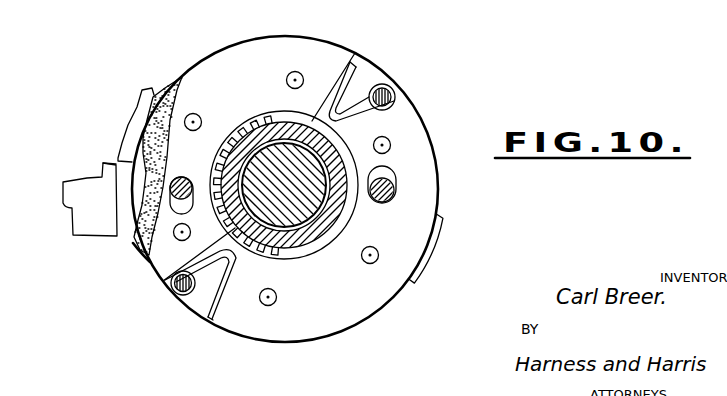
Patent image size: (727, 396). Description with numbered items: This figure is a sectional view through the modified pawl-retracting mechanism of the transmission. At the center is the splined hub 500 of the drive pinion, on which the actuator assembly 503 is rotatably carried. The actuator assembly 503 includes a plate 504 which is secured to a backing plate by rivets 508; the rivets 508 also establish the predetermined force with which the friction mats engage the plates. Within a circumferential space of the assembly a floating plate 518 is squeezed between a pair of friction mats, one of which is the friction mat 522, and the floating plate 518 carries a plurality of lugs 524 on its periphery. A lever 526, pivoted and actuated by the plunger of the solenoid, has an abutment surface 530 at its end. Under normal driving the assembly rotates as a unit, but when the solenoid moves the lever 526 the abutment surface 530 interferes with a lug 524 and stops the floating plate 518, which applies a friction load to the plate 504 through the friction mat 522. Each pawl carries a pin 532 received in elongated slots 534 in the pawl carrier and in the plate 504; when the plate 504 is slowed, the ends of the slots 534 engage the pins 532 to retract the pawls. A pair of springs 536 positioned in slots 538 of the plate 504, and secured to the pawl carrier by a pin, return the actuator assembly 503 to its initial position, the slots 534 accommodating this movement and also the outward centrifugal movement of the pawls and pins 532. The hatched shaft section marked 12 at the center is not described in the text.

The shaft 12 is at (284, 185).
The splined hub 500 is at (309, 249).
The actuator assembly 503 is at (393, 92).
The plate 504 is at (310, 37).
The rivets 508 is at (195, 114).
The floating plate 518 is at (133, 243).
The friction mat 522 is at (173, 98).
The lugs 524 is at (141, 100).
The lever 526 is at (88, 218).
The abutment surface 530 is at (107, 162).
The pin 532 is at (377, 204).
The elongated slots 534 is at (389, 173).
The springs 536 is at (362, 68).
The slots 538 is at (360, 61).